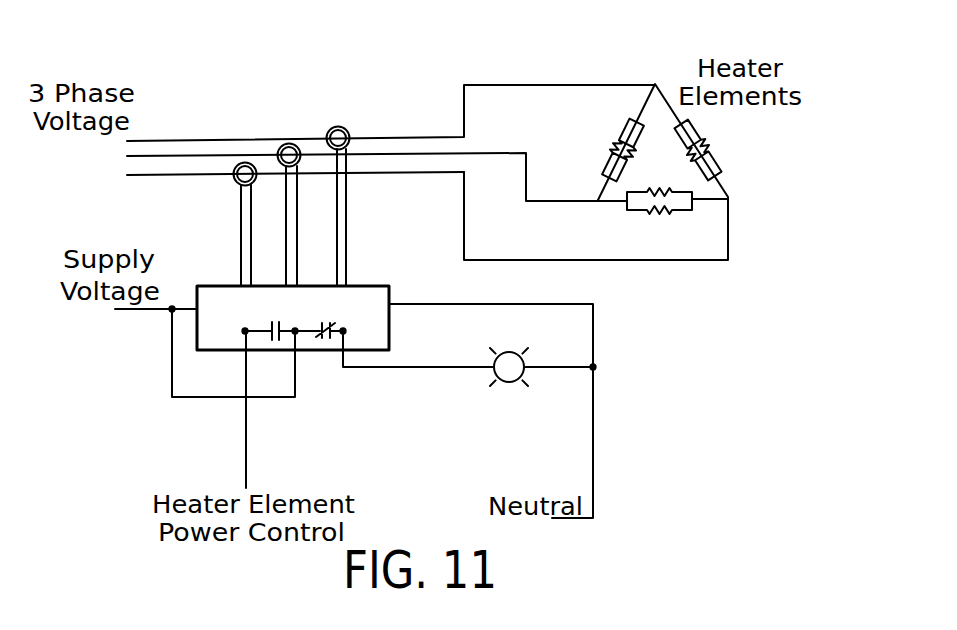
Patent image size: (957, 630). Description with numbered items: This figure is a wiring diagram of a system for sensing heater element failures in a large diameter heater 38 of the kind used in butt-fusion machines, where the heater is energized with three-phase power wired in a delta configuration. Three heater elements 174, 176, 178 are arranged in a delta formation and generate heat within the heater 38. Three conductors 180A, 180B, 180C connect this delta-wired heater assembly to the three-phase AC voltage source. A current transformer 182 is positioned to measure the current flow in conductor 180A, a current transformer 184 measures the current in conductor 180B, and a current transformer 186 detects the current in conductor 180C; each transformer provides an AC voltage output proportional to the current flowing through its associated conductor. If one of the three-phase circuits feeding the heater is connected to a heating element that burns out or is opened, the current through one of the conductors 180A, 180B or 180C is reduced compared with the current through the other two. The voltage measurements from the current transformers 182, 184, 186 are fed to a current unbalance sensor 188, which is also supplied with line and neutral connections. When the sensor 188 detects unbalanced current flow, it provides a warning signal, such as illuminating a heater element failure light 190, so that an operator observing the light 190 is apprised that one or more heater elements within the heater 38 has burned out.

The heater 38 is at (680, 276).
The heater element 174 is at (613, 150).
The heater element 176 is at (703, 140).
The heater element 178 is at (655, 212).
The conductor 180A is at (379, 137).
The conductor 180B is at (398, 153).
The conductor 180C is at (426, 172).
The current transformer 182 is at (338, 126).
The current transformer 184 is at (289, 143).
The current transformer 186 is at (245, 162).
The current unbalance sensor 188 is at (232, 338).
The heater element failure light 190 is at (509, 380).